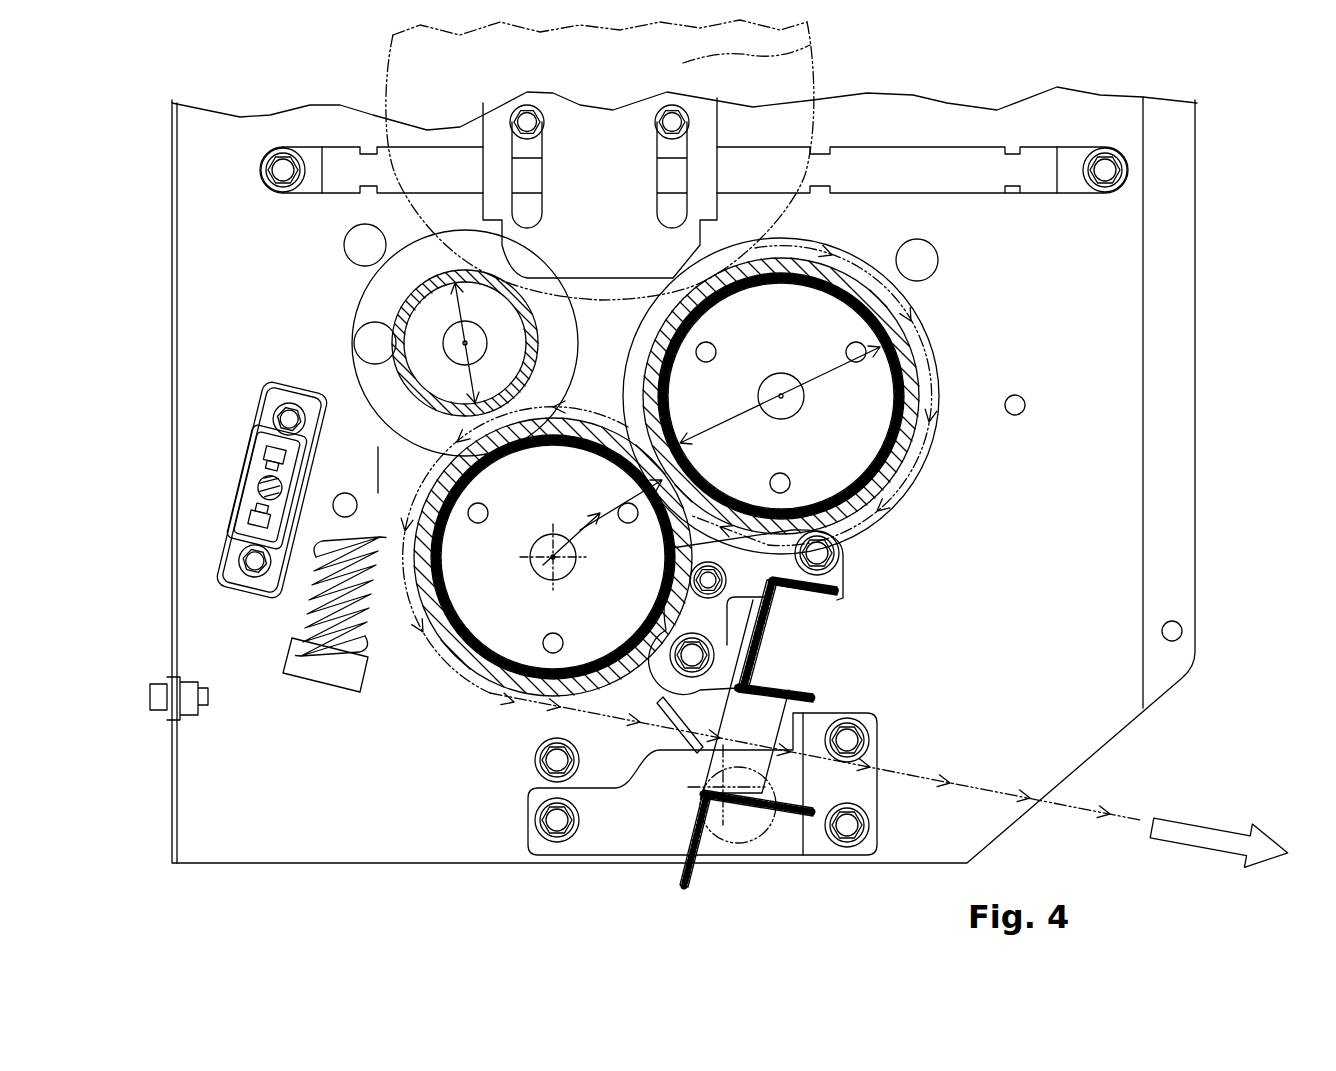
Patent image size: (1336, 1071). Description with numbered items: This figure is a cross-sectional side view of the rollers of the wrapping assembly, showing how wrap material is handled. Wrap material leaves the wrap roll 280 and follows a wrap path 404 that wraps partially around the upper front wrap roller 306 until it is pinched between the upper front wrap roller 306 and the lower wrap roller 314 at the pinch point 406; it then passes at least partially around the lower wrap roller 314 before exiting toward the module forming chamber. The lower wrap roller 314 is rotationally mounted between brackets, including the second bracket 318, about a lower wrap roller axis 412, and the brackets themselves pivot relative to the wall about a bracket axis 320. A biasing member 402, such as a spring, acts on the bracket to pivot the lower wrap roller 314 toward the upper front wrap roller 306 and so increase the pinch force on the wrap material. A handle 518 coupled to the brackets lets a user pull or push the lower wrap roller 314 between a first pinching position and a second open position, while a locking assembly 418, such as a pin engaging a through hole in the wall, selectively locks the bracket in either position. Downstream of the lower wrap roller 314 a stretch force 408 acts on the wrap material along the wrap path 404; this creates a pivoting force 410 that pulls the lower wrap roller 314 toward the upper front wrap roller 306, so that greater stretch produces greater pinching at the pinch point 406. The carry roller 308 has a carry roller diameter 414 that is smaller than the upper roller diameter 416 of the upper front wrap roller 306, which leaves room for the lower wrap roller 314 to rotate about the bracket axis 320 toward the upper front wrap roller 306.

The wrap roll 280 is at (812, 48).
The carry roller 308 is at (425, 280).
The upper front wrap roller 306 is at (928, 320).
The upper roller diameter 416 is at (819, 313).
The carry roller diameter 414 is at (455, 312).
The lower wrap roller axis 412 is at (553, 557).
The pivoting force 410 is at (590, 533).
The pinch point 406 is at (588, 428).
The wrap path 404 is at (1105, 815).
The stretch force 408 is at (1200, 845).
The locking assembly 418 is at (348, 493).
The handle 518 is at (230, 470).
The second bracket 318 is at (378, 493).
The biasing member 402 is at (322, 600).
The lower wrap roller 314 is at (645, 617).
The bracket axis 320 is at (777, 767).